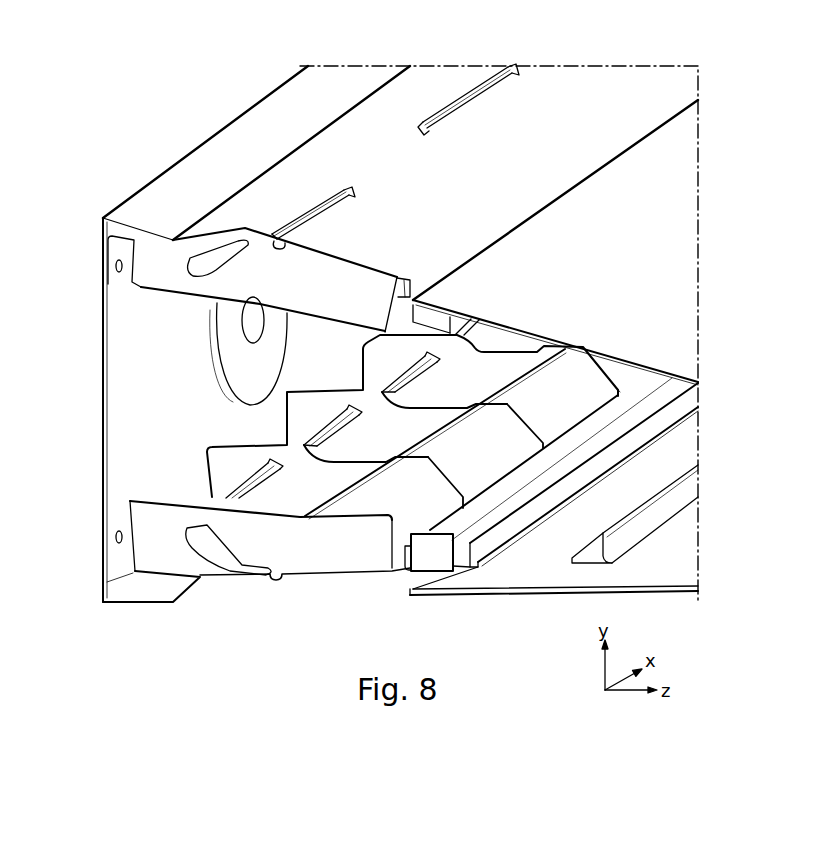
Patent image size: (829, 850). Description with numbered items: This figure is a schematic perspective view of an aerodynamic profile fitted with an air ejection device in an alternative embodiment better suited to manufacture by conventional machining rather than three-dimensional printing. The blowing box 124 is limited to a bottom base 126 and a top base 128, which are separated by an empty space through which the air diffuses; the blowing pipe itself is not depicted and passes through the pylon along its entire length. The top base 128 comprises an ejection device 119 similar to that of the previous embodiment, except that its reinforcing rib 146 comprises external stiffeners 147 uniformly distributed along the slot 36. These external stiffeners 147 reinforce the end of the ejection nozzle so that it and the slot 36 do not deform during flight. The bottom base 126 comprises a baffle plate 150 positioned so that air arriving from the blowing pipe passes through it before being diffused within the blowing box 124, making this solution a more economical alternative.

The slot 36 is at (397, 143).
The ejection device 119 is at (163, 367).
The blowing box 124 is at (236, 597).
The bottom base 126 is at (142, 556).
The top base 128 is at (173, 267).
The reinforcing rib 146 is at (252, 218).
The external stiffeners 147 is at (337, 182).
The baffle plate 150 is at (218, 484).